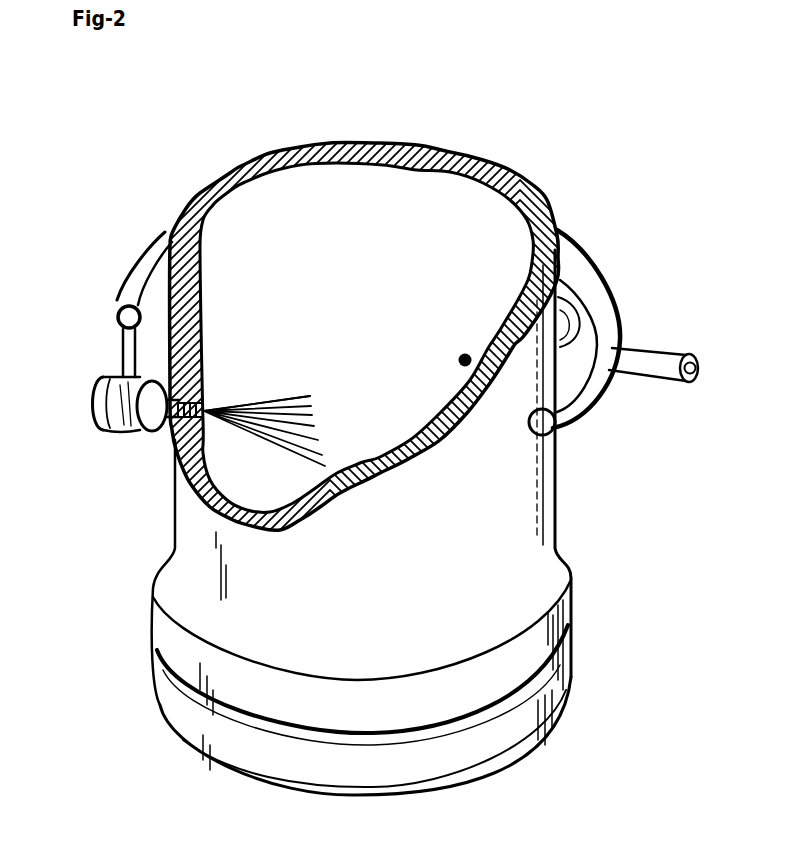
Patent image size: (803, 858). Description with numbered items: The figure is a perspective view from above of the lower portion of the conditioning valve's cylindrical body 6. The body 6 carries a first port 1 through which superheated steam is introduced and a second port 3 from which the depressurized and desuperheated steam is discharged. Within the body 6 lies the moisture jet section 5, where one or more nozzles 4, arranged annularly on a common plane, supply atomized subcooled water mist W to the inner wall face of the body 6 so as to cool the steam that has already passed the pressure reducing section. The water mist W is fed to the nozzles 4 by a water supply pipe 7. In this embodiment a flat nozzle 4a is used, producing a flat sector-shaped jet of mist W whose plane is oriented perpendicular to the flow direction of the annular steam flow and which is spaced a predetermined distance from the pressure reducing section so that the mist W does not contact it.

The first port 1 is at (260, 404).
The second port 3 is at (180, 743).
The nozzle 4 is at (78, 401).
The flat nozzle 4a is at (460, 357).
The moisture jet section 5 is at (420, 222).
The cylindrical body 6 is at (274, 156).
The water supply pipe 7 is at (595, 262).
The subcooled water mist W is at (263, 440).